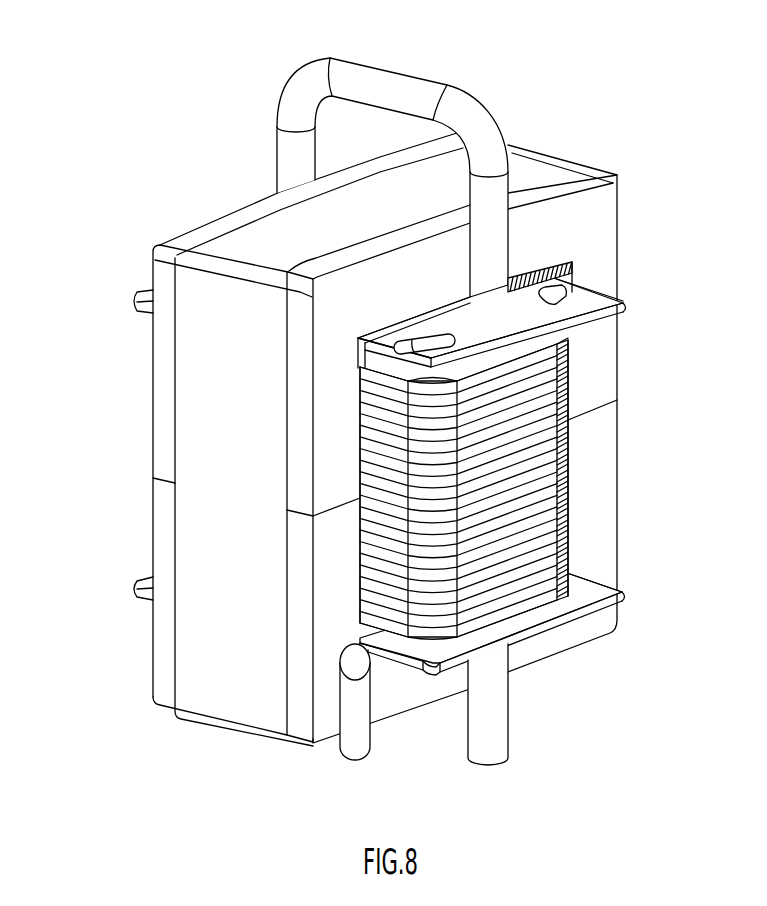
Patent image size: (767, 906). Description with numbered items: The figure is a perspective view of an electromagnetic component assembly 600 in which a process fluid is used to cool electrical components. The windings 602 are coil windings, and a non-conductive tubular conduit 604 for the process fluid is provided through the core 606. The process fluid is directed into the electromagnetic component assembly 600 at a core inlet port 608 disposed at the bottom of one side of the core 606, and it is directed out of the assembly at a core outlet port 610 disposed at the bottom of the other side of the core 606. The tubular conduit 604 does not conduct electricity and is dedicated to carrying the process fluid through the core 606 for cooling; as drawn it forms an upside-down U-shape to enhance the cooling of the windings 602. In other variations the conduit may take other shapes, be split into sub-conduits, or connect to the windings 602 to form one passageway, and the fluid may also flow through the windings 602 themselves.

The electromagnetic component assembly 600 is at (57, 126).
The windings 602 is at (543, 473).
The tubular conduit 604 is at (413, 88).
The core 606 is at (237, 240).
The core inlet port 608 is at (369, 752).
The core outlet port 610 is at (497, 727).